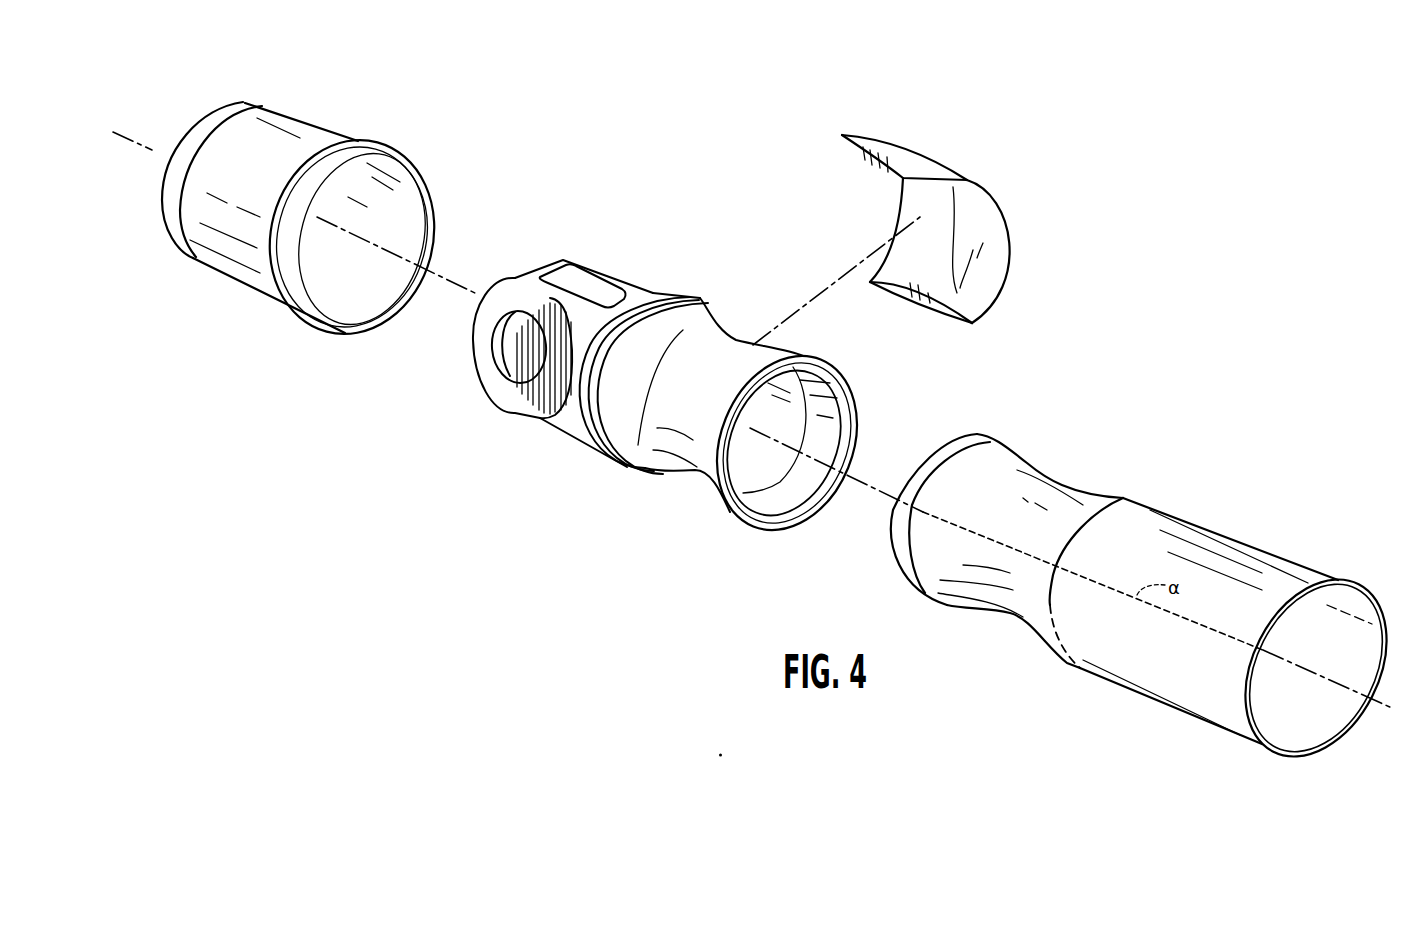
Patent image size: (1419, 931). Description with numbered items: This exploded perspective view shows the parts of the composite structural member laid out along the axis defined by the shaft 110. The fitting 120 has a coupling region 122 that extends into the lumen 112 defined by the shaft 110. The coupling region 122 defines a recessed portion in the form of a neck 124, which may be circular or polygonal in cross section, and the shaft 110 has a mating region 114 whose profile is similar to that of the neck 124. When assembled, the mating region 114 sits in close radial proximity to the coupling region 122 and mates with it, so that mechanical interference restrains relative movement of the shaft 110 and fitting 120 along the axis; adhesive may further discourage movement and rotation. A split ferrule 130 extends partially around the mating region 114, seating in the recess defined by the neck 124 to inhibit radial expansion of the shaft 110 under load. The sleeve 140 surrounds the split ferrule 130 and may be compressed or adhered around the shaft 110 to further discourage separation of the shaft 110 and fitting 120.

The shaft 110 is at (1257, 547).
The lumen 112 is at (1305, 733).
The mating region 114 is at (1007, 612).
The fitting 120 is at (577, 261).
The coupling region 122 is at (742, 345).
The neck 124 is at (690, 478).
The split ferrule 130 is at (1003, 247).
The sleeve 140 is at (307, 137).